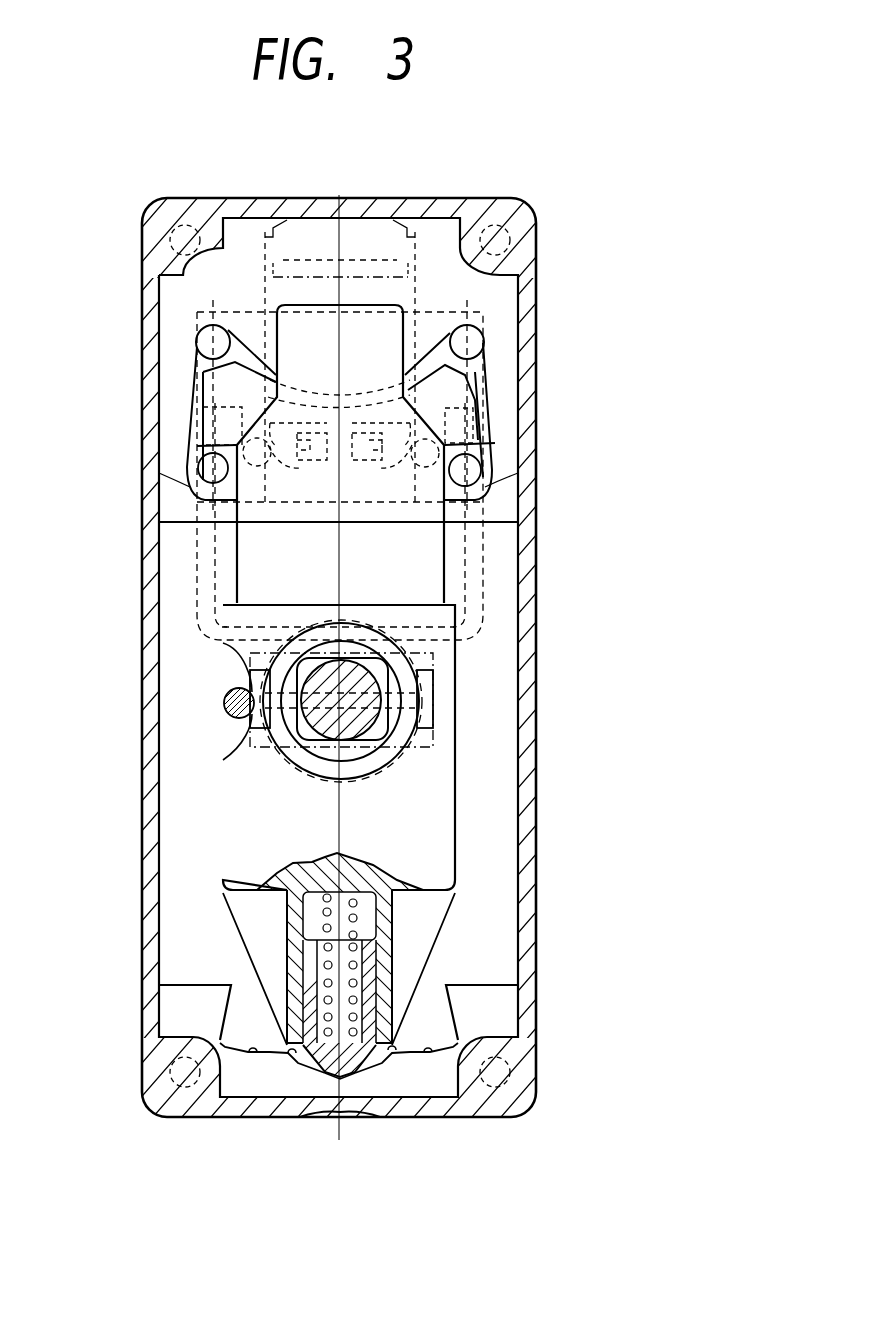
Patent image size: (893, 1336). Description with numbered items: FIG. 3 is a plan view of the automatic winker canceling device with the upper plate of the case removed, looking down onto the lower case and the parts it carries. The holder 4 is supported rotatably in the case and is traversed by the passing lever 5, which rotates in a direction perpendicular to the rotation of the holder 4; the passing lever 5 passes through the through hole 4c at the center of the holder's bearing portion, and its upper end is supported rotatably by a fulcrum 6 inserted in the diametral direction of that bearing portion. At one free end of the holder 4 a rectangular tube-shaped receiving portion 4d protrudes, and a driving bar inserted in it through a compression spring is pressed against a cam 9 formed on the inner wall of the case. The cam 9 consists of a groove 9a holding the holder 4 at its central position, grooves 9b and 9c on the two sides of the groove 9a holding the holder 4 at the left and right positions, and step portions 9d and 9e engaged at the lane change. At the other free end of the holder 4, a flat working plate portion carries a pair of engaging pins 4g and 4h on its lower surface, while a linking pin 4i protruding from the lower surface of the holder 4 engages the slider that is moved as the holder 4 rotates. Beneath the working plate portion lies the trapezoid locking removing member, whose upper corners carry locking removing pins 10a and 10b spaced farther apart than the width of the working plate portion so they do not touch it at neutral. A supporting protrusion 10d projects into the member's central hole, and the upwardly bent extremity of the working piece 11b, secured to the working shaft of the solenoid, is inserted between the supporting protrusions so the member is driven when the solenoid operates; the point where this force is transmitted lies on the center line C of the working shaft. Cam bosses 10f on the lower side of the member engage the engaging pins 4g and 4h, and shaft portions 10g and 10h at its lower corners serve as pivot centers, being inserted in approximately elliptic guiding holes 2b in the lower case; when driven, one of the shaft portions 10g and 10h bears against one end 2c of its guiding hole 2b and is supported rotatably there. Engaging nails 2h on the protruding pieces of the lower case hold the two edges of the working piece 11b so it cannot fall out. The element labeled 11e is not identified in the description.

The center line C is at (336, 631).
The engaging nails 2h is at (340, 314).
The guiding holes 2b is at (332, 470).
The end of guiding hole 2c is at (333, 528).
The holder 4 is at (405, 825).
The through hole 4c is at (433, 700).
The receiving portion 4d is at (414, 981).
The engaging pin 4g is at (142, 470).
The engaging pin 4h is at (526, 425).
The linking pin 4i is at (157, 701).
The passing lever 5 is at (441, 680).
The fulcrum 6 is at (422, 701).
The cam 9 is at (339, 1110).
The groove 9a is at (328, 1125).
The groove 9b is at (227, 1113).
The groove 9c is at (462, 1113).
The step portion 9d is at (274, 1113).
The step portion 9e is at (411, 1112).
The locking removing pin 10a is at (166, 412).
The locking removing pin 10b is at (507, 408).
The supporting protrusion 10d is at (340, 431).
The cam bosses 10f is at (341, 502).
The shaft portion 10g is at (136, 496).
The shaft portion 10h is at (531, 463).
The working piece 11b is at (379, 506).
The spring portion 11e is at (301, 506).